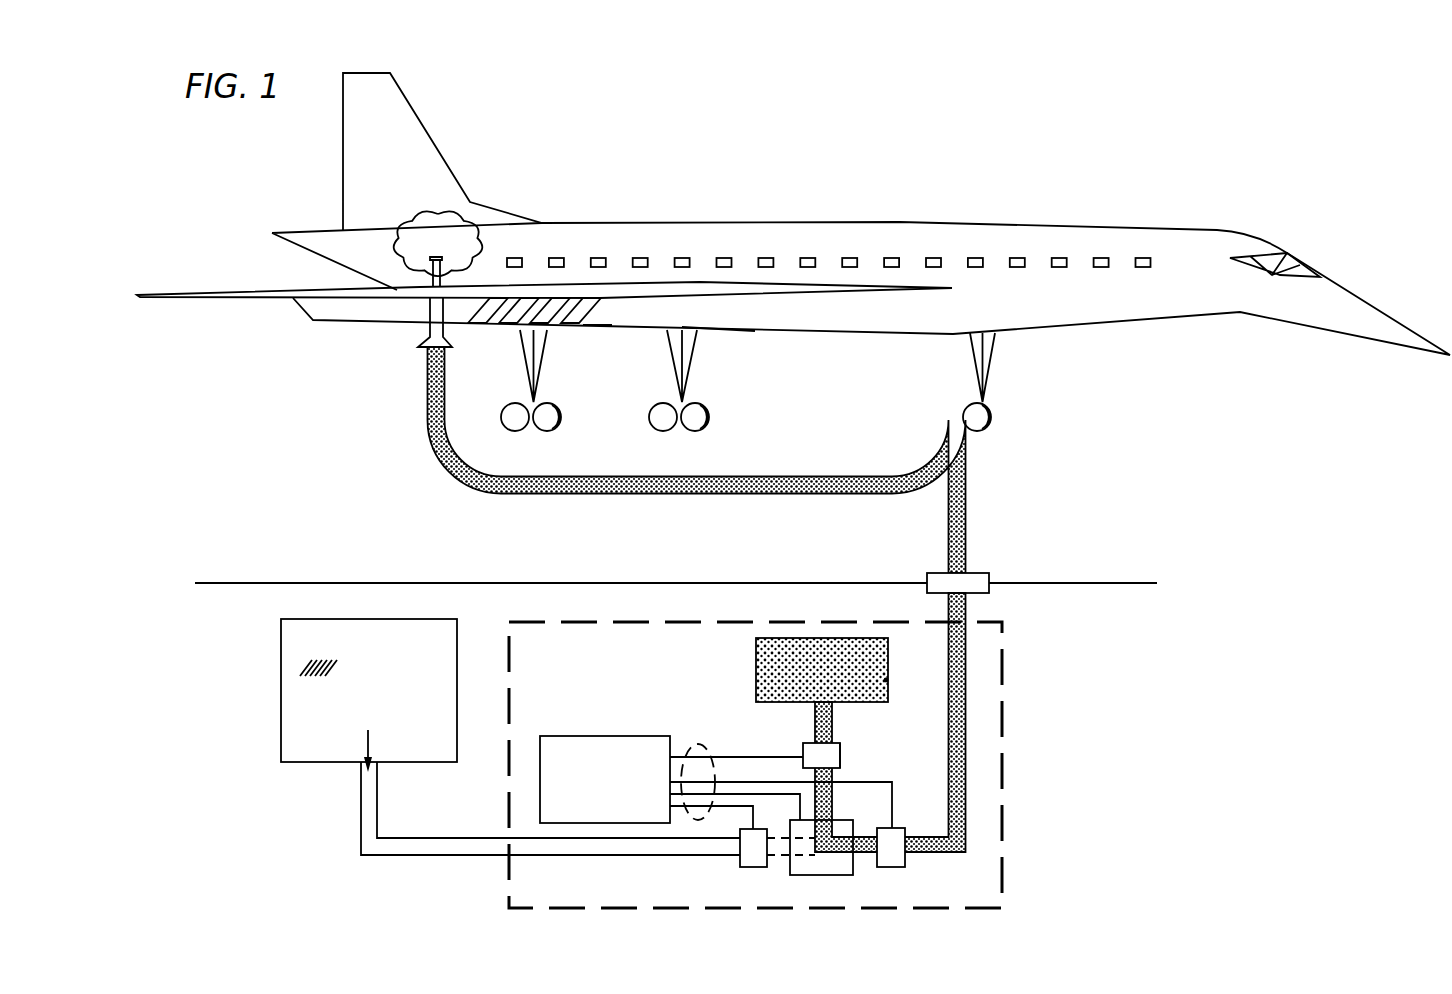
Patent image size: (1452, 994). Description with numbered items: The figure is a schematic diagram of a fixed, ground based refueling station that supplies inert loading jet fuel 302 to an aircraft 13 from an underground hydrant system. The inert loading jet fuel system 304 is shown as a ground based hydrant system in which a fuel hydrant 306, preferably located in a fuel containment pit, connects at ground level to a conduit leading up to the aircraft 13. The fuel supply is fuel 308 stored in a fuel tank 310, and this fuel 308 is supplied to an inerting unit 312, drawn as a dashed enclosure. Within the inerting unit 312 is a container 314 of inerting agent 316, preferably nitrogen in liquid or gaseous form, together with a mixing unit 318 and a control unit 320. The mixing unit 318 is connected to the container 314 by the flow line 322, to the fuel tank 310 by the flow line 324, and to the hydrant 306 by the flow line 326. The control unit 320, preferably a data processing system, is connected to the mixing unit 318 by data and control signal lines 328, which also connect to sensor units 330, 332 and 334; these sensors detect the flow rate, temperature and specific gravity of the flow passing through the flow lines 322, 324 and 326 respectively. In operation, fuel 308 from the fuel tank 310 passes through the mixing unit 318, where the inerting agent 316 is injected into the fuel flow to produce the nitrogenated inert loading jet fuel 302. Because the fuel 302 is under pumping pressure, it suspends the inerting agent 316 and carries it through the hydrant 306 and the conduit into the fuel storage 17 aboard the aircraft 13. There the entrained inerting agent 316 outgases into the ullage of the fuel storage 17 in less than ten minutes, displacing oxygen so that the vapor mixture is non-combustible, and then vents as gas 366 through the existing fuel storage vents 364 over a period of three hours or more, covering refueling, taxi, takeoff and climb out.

The aircraft 13 is at (1358, 313).
The fuel storage 17 is at (710, 292).
The fuel storage vents 364 is at (431, 258).
The gas 366 is at (455, 223).
The inert loading jet fuel 302 is at (962, 612).
The inert loading jet fuel system 304 is at (992, 563).
The fuel hydrant 306 is at (937, 576).
The fuel 308 is at (302, 672).
The fuel tank 310 is at (380, 619).
The inerting unit 312 is at (1007, 723).
The container 314 is at (755, 670).
The inerting agent 316 is at (887, 680).
The mixing unit 318 is at (808, 875).
The control unit 320 is at (627, 791).
The flow line 322 is at (817, 728).
The flow line 324 is at (463, 856).
The flow line 326 is at (950, 783).
The data and control signal lines 328 is at (700, 743).
The sensor unit 330 is at (840, 752).
The sensor unit 332 is at (742, 866).
The sensor unit 334 is at (897, 868).